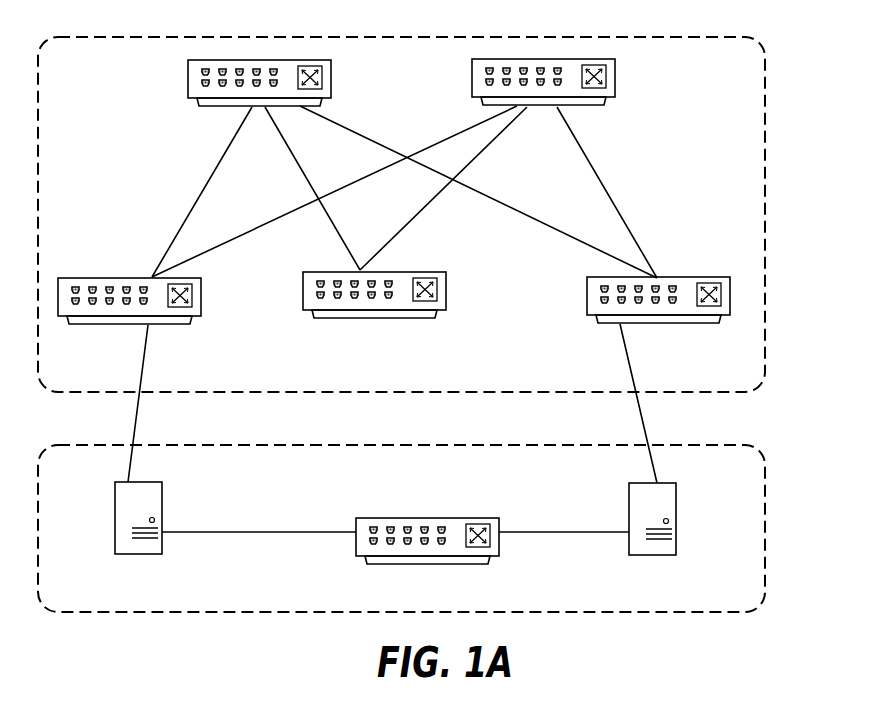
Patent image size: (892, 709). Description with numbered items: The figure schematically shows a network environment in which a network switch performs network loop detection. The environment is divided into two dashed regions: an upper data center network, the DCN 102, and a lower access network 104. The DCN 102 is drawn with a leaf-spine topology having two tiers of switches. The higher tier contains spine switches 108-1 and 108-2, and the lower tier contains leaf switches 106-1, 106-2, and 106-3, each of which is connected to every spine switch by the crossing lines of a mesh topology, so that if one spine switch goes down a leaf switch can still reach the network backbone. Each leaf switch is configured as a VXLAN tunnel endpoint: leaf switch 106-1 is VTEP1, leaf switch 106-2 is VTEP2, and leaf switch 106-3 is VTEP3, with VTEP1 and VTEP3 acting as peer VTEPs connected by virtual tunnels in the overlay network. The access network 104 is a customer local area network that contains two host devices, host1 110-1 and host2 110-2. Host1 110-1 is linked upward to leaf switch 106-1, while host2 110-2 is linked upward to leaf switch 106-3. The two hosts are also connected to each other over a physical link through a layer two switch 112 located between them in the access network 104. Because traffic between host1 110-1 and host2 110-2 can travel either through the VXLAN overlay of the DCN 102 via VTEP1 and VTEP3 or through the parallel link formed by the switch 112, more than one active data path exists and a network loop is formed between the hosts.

The DCN 102 is at (765, 80).
The access network 104 is at (765, 468).
The leaf switch 106-1 is at (62, 278).
The leaf switch 106-2 is at (422, 272).
The leaf switch 106-3 is at (700, 277).
The spine switch 108-1 is at (188, 84).
The spine switch 108-2 is at (614, 66).
The host device 110-1 is at (162, 508).
The host device 110-2 is at (677, 508).
The switch 112 is at (375, 518).